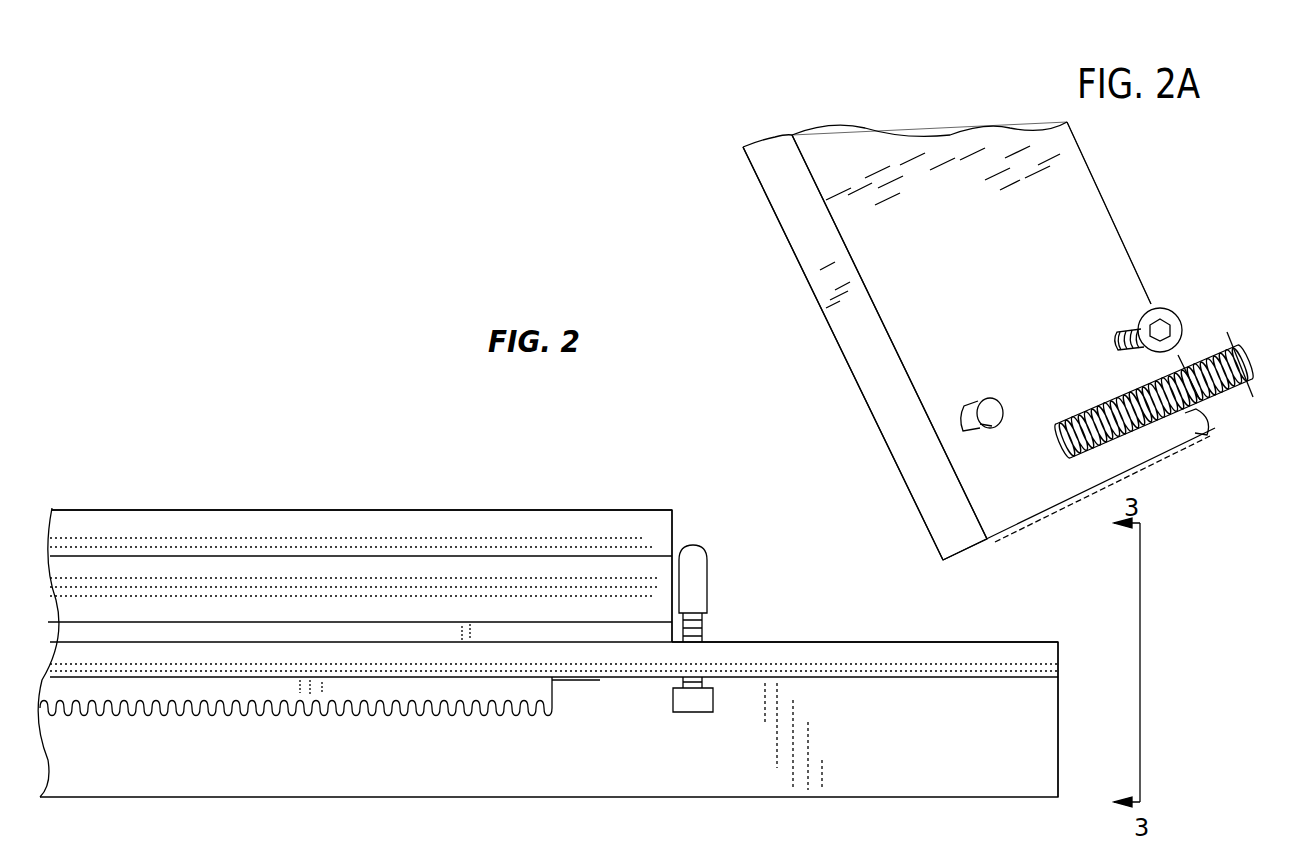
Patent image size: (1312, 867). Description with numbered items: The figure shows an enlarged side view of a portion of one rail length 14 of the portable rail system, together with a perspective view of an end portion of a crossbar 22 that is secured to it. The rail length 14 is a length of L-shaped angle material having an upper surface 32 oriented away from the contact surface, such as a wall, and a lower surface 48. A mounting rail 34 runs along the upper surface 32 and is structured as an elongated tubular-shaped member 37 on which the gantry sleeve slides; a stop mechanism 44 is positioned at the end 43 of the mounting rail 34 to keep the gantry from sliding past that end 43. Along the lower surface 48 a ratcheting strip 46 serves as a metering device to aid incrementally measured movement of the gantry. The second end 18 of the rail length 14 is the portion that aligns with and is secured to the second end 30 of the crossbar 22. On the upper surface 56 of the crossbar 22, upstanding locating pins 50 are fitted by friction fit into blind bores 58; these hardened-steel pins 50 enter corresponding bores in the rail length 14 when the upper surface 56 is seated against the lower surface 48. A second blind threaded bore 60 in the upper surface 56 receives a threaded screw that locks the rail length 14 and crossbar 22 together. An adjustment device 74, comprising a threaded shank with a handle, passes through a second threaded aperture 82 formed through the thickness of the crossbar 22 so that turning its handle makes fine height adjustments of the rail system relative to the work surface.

In FIG. 2, the rail length 14 is at (848, 652).
In FIG. 2, the second end 18 is at (1008, 634).
In FIG. 2A, the crossbar 22 is at (867, 358).
In FIG. 2A, the second end 30 is at (937, 488).
In FIG. 2, the upper surface 32 is at (740, 636).
In FIG. 2, the mounting rail 34 is at (410, 577).
In FIG. 2, the elongated tubular-shaped member 37 is at (225, 523).
In FIG. 2, the end 43 is at (672, 537).
In FIG. 2, the stop mechanism 44 is at (700, 553).
In FIG. 2, the ratcheting strip 46 is at (405, 690).
In FIG. 2, the lower surface 48 is at (600, 684).
In FIG. 2A, the locating pin 50 is at (980, 396).
In FIG. 2A, the upper surface 56 is at (981, 270).
In FIG. 2A, the blind bore 58 is at (990, 432).
In FIG. 2A, the threaded bore 60 is at (1117, 325).
In FIG. 2A, the adjustment device 74 is at (1073, 412).
In FIG. 2A, the second threaded aperture 82 is at (1058, 440).